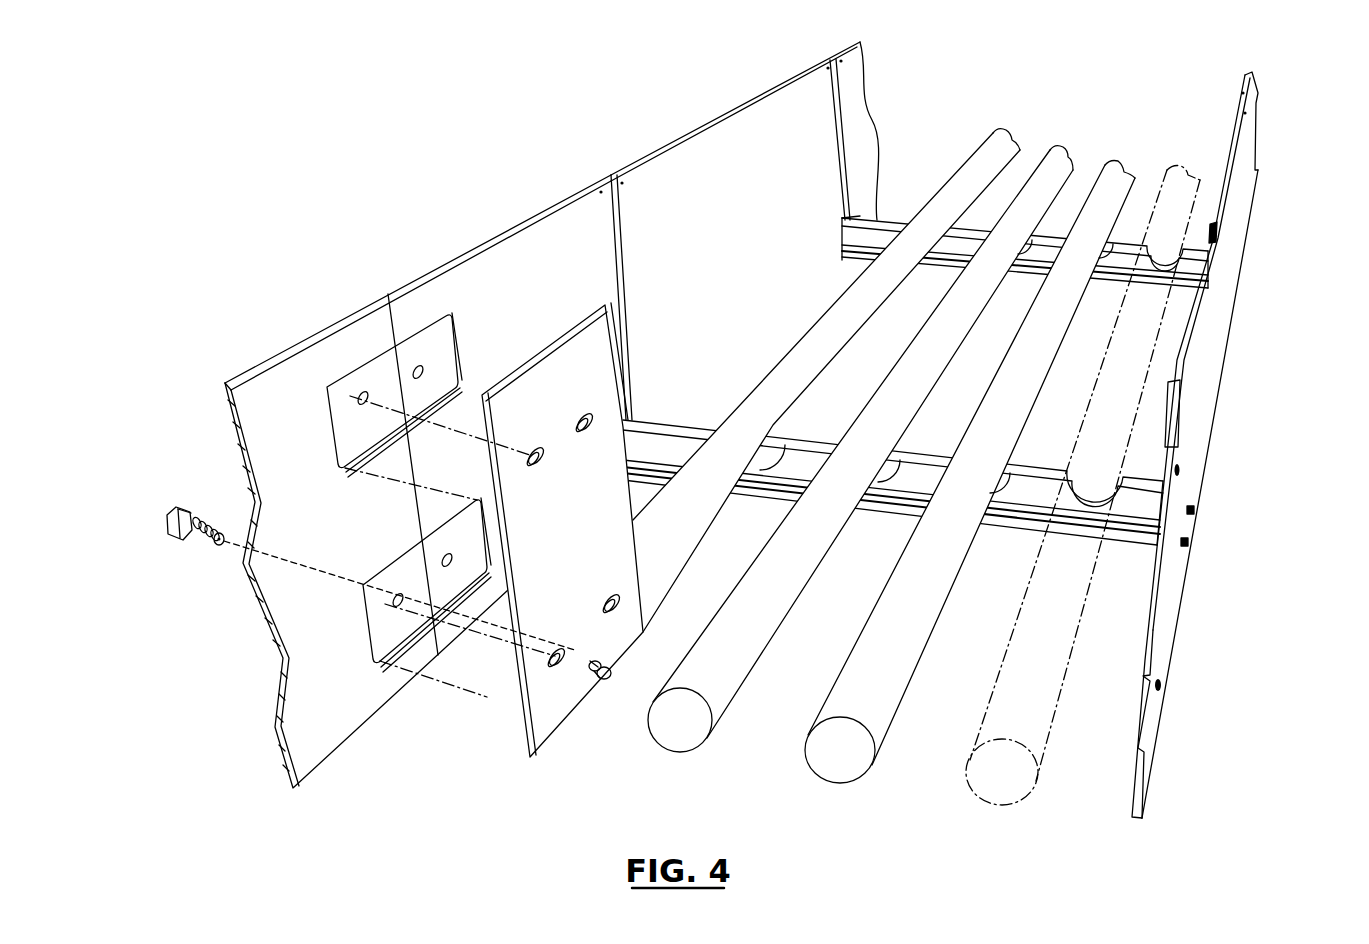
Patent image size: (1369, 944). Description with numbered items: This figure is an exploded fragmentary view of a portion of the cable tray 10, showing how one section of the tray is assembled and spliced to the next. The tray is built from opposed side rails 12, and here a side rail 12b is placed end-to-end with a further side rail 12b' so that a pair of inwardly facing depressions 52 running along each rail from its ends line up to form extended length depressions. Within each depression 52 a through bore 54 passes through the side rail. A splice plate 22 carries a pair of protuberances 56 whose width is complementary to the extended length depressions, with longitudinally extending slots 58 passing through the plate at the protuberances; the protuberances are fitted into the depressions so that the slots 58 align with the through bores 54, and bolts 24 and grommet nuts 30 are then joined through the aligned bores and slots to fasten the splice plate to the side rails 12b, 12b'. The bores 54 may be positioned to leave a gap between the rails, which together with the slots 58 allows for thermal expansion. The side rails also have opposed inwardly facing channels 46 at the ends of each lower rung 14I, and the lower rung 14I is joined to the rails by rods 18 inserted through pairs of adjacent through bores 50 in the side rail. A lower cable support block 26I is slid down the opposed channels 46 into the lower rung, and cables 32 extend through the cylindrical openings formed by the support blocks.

The cable tray 10 is at (676, 106).
The side rail 12 is at (1195, 445).
The side rail 12b is at (782, 126).
The side rail 12b' is at (376, 481).
The lower rung 14I is at (1133, 545).
The rod 18 is at (1192, 538).
The splice plate 22 is at (551, 720).
The bolt 24 is at (185, 510).
The lower cable support block 26I is at (1028, 490).
The grommet nut 30 is at (600, 690).
The cable 32 is at (837, 763).
The inwardly facing channel 46 is at (611, 174).
The through bore 50 is at (1238, 248).
The inwardly facing depression 52 is at (364, 394).
The through bore 54 is at (373, 370).
The protuberance 56 is at (480, 473).
The longitudinally extending slot 58 is at (533, 452).